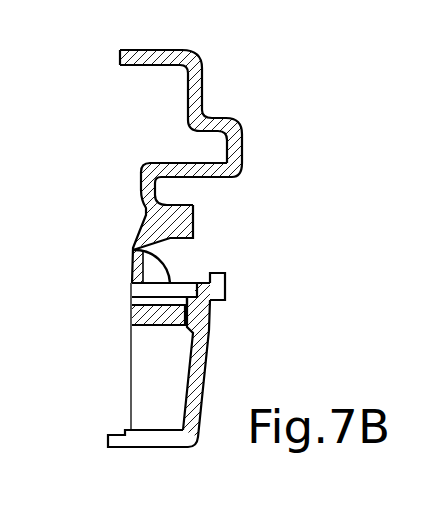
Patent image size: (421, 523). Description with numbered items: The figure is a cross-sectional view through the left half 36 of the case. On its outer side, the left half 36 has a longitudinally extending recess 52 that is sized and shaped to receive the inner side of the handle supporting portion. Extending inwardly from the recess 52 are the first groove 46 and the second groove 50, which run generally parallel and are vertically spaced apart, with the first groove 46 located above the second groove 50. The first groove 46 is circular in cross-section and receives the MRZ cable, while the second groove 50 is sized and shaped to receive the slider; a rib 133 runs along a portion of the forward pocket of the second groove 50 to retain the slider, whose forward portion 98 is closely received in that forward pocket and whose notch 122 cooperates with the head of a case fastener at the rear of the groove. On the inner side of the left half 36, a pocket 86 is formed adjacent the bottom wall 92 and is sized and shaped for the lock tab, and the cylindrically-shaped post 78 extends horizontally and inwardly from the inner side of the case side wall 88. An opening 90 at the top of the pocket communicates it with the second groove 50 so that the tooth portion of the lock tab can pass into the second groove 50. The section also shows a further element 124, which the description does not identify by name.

The left half of the case 36 is at (100, 111).
The recess 52 is at (236, 171).
The first groove 46 is at (198, 180).
The second groove 50 is at (183, 243).
The opening 90 is at (137, 247).
The rib 133 is at (225, 285).
The cylindrically-shaped post 78 is at (150, 325).
The pocket 86 is at (153, 388).
The case side wall 88 is at (205, 385).
The bottom wall 92 is at (155, 447).
The forward portion of the slider 98 is at (224, 522).
The notch of the slider 122 is at (268, 522).
The member 124 is at (340, 516).